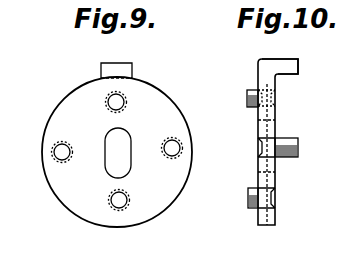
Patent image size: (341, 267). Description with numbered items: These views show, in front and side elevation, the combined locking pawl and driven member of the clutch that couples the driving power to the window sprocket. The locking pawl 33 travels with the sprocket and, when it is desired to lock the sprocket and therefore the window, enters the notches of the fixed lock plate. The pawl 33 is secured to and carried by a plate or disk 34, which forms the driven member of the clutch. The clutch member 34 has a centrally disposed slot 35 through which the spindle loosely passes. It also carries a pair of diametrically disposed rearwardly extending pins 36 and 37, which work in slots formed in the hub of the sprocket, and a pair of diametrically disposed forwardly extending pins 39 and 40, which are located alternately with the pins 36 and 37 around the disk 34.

In FIG. 9, the locking pawl 33 is at (127, 68).
In FIG. 10, the locking pawl 33 is at (287, 68).
In FIG. 9, the plate or disk 34 is at (75, 203).
In FIG. 10, the plate or disk 34 is at (262, 113).
In FIG. 9, the centrally disposed slot 35 is at (122, 165).
In FIG. 9, the rearwardly extending pin 36 is at (122, 104).
In FIG. 10, the rearwardly extending pin 36 is at (247, 97).
In FIG. 9, the rearwardly extending pin 37 is at (118, 207).
In FIG. 10, the rearwardly extending pin 37 is at (250, 209).
In FIG. 9, the forwardly extending pin 39 is at (56, 158).
In FIG. 10, the forwardly extending pin 39 is at (290, 158).
In FIG. 9, the forwardly extending pin 40 is at (177, 155).
In FIG. 10, the forwardly extending pin 40 is at (337, 92).